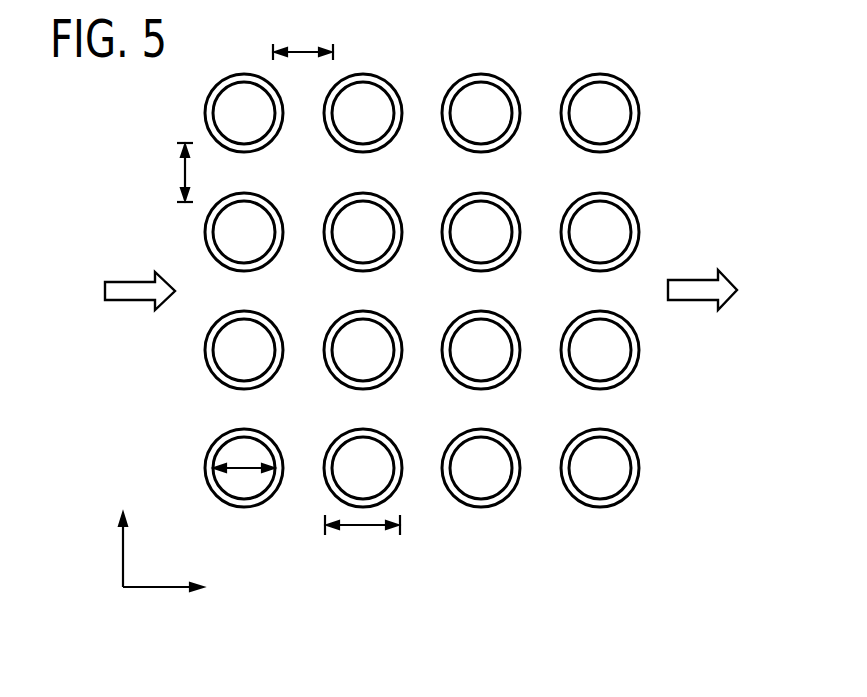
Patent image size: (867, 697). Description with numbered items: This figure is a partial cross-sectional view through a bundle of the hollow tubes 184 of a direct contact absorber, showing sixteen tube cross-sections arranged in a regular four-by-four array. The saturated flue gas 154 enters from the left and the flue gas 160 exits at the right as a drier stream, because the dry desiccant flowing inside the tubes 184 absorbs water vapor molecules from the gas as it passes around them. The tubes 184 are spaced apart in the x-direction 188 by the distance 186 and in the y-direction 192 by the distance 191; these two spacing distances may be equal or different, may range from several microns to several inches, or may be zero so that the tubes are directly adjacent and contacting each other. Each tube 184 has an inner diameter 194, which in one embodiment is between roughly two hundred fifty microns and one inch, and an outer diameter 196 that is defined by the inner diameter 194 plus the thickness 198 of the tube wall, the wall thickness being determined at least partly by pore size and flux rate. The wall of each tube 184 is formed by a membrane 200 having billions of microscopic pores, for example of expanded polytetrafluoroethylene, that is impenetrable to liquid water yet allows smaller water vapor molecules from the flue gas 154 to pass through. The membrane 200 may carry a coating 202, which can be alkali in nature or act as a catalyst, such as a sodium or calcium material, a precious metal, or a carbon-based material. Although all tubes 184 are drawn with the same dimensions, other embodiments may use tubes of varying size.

The saturated flue gas 154 is at (134, 301).
The flue gas 160 is at (690, 280).
The tubes 184 is at (415, 262).
The distance 186 is at (307, 51).
The x-direction 188 is at (142, 590).
The distance 191 is at (183, 172).
The y-direction 192 is at (124, 565).
The inner diameter 194 is at (250, 470).
The outer diameter 196 is at (362, 527).
The thickness of the tube wall 198 is at (216, 378).
The membrane 200 is at (458, 91).
The coating 202 is at (512, 82).